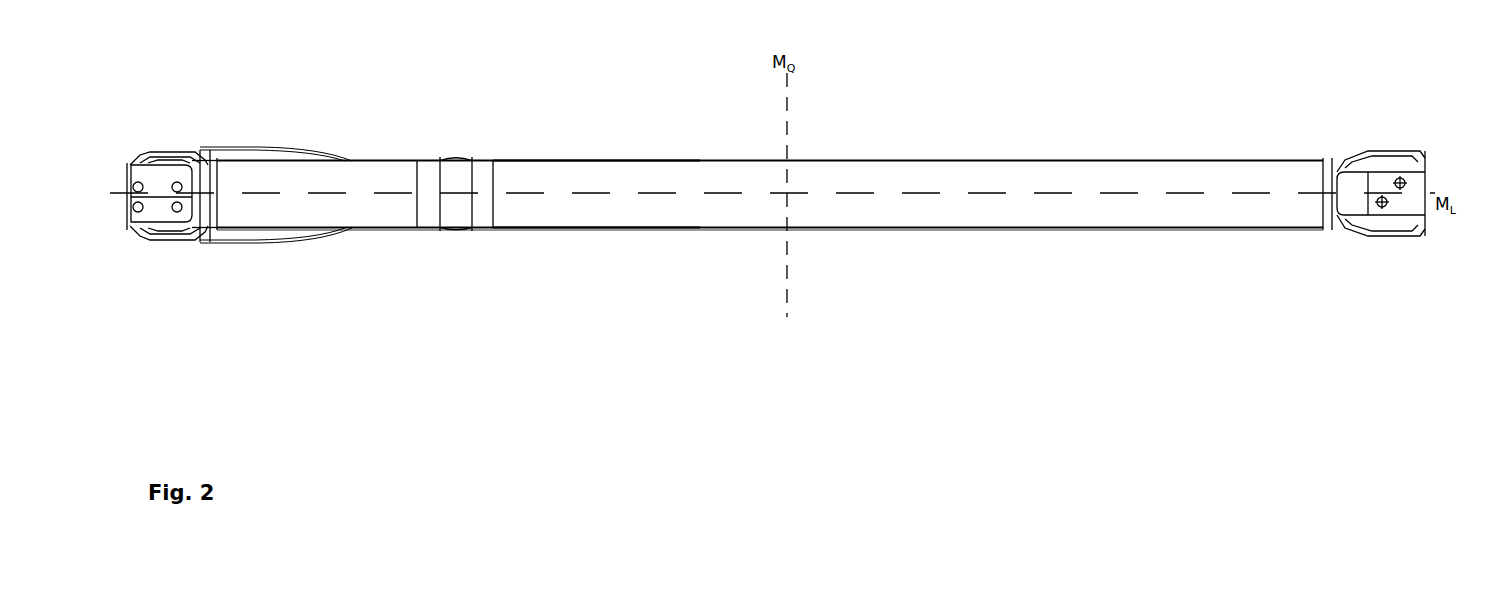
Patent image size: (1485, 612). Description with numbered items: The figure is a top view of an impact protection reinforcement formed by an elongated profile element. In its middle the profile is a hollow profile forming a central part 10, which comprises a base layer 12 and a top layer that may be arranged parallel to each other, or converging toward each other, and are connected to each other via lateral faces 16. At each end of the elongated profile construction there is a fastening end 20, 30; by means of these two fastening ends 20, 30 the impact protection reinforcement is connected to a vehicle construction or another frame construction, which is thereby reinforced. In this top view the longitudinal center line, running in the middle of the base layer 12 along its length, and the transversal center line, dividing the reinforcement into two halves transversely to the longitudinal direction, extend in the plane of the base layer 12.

The central part 10 is at (1052, 227).
The base layer 12 is at (705, 210).
The lateral faces 16 is at (596, 160).
The fastening end 20 is at (192, 237).
The fastening end 30 is at (1387, 236).